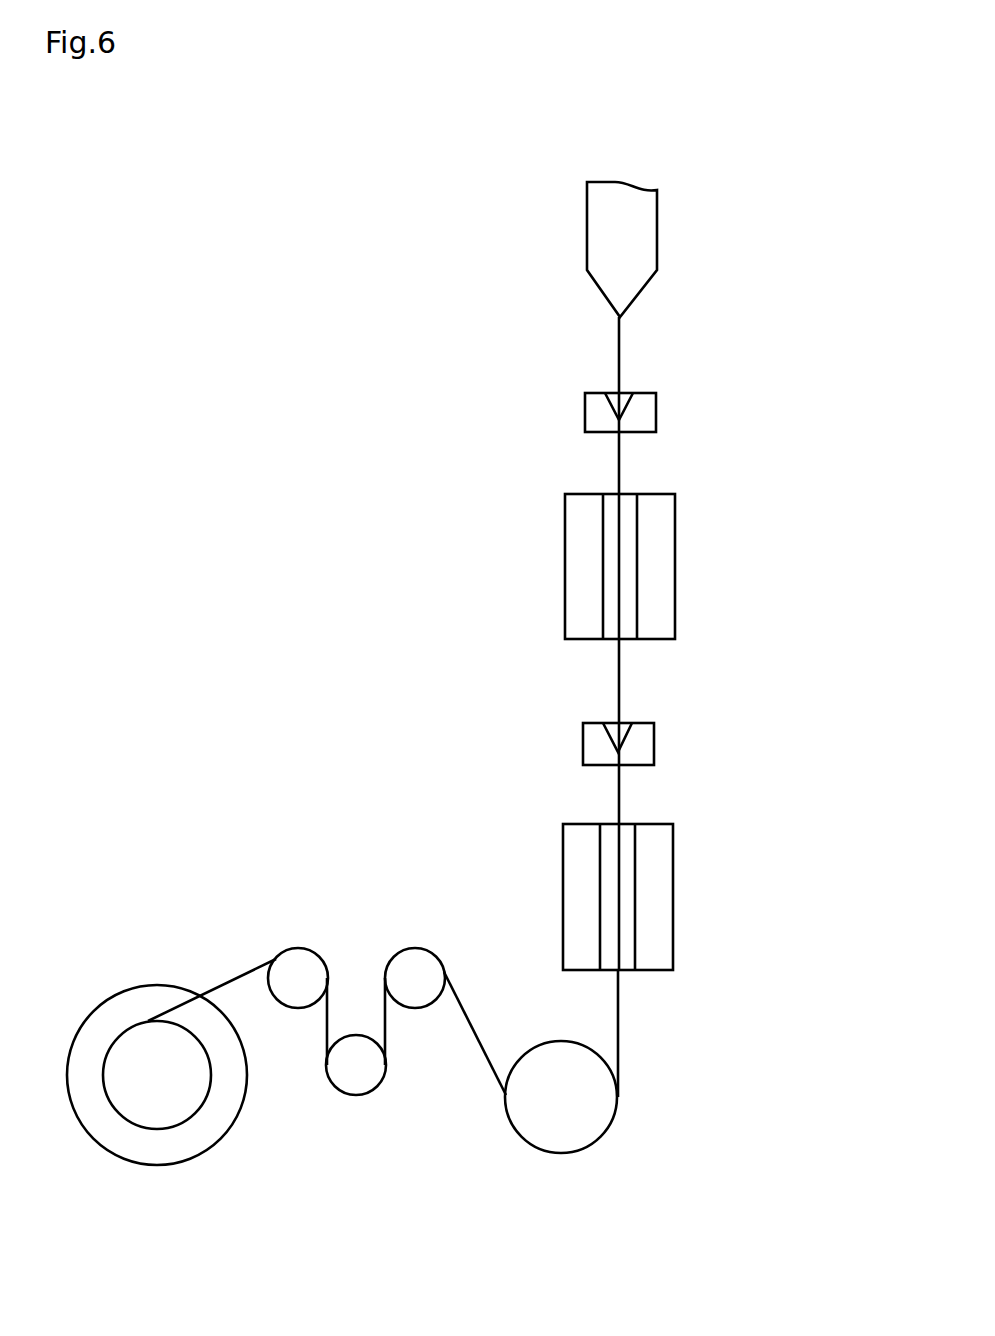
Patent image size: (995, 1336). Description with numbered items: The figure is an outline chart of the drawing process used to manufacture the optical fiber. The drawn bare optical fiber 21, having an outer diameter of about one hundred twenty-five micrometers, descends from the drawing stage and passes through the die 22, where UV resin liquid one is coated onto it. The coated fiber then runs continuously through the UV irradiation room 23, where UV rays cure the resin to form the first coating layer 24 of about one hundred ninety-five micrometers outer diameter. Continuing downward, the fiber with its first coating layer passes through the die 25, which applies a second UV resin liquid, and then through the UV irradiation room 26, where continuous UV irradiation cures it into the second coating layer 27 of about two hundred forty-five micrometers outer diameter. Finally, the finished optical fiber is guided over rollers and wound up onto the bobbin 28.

The drawn bare optical fiber 21 is at (619, 340).
The die 22 is at (656, 415).
The UV irradiation room 23 is at (675, 538).
The first coating layer 24 is at (618, 673).
The die 25 is at (654, 745).
The UV irradiation room 26 is at (673, 905).
The second coating layer 27 is at (618, 1032).
The bobbin 28 is at (152, 985).